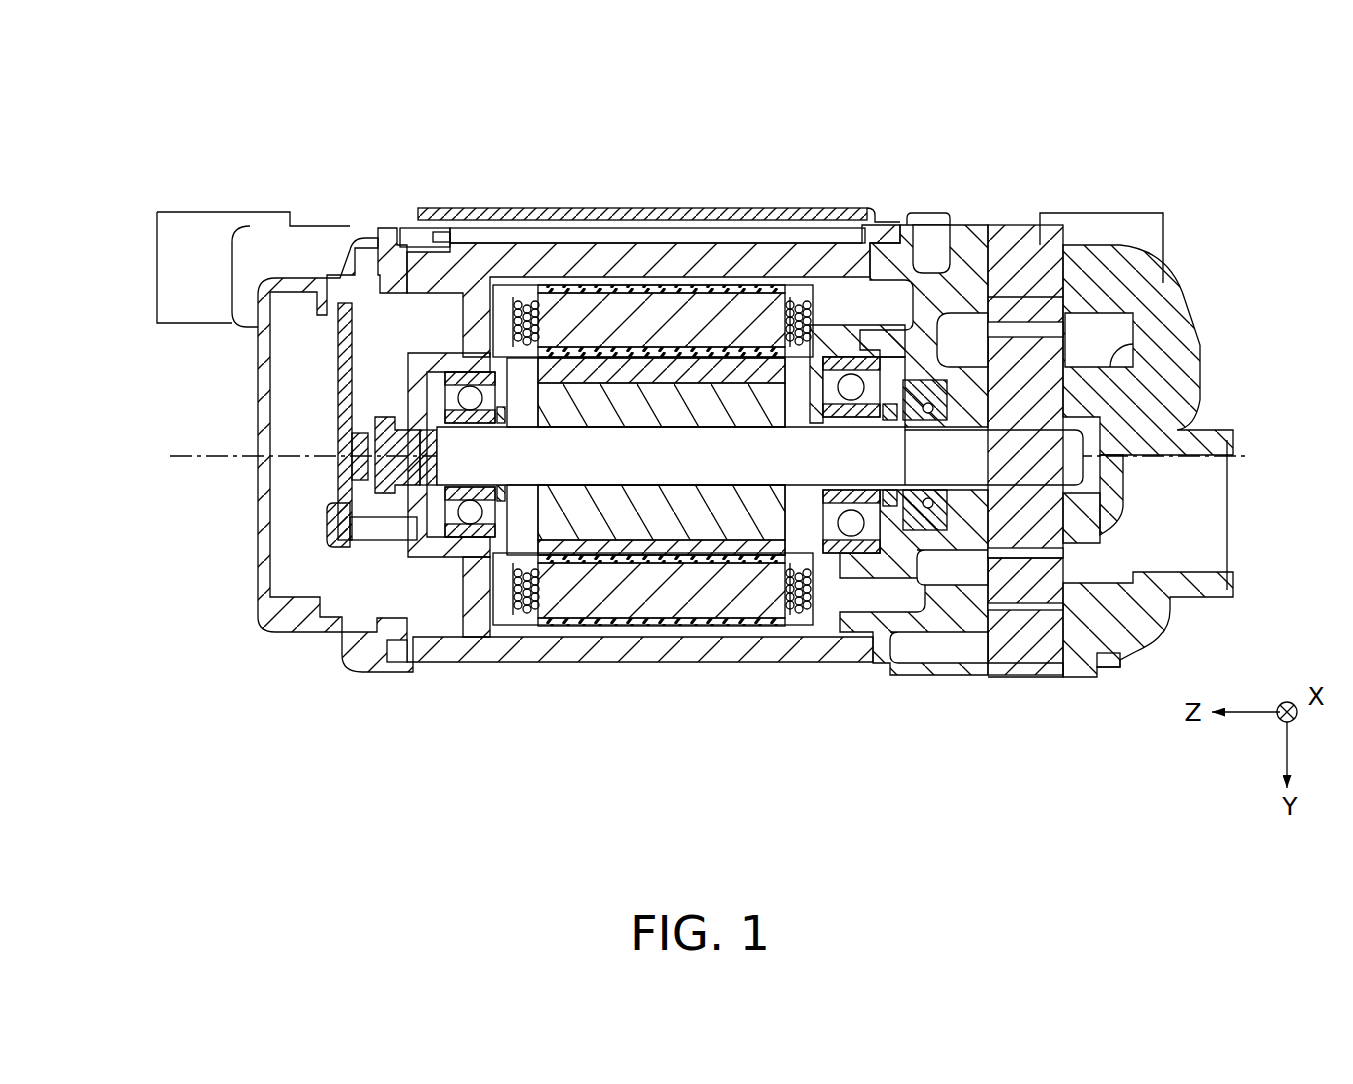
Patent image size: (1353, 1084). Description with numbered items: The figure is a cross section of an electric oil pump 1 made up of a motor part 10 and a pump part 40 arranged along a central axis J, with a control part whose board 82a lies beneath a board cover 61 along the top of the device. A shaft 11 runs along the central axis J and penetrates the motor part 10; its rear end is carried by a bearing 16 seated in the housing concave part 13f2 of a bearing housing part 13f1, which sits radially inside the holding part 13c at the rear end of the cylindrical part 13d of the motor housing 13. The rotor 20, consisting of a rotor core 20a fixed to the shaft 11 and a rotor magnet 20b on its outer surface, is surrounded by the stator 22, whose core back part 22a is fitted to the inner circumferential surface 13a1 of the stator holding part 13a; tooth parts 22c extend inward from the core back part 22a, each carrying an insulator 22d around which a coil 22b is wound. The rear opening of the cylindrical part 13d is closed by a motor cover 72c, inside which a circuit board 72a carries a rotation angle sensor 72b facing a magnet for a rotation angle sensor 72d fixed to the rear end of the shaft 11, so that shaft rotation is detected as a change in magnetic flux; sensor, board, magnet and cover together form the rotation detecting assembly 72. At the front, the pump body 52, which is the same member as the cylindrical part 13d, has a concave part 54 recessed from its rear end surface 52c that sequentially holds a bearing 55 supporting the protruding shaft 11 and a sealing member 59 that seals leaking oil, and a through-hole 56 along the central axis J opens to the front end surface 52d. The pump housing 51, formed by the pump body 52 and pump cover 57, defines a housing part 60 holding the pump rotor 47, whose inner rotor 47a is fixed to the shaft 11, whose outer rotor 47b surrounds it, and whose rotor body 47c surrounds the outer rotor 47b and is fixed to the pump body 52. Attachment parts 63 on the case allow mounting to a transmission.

The electric oil pump 1 is at (697, 446).
The motor part 10 is at (666, 469).
The shaft 11 is at (960, 438).
The motor housing 13 is at (592, 534).
The stator holding part 13a is at (630, 645).
The inner circumferential surface 13a1 is at (670, 657).
The holding part 13c is at (460, 652).
The cylindrical part 13d is at (510, 662).
The bearing housing part 13f1 is at (355, 668).
The housing concave part 13f2 is at (425, 660).
The bearing 16 is at (470, 512).
The rotor 20 is at (654, 348).
The rotor core 20a is at (622, 393).
The rotor magnet 20b is at (740, 372).
The stator 22 is at (653, 531).
The core back part 22a is at (608, 628).
The coil 22b is at (790, 633).
The tooth part 22c is at (750, 615).
The insulator 22d is at (565, 640).
The pump part 40 is at (1053, 464).
The pump rotor 47 is at (1140, 522).
The inner rotor 47a is at (1050, 532).
The outer rotor 47b is at (1035, 590).
The rotor body 47c is at (1000, 650).
The pump housing 51 is at (1040, 243).
The pump body 52 is at (901, 478).
The end surface 52c is at (826, 560).
The end surface 52d is at (1000, 385).
The concave part 54 is at (865, 548).
The bearing 55 is at (853, 545).
The through-hole 56 is at (1150, 408).
The pump cover 57 is at (1130, 680).
The sealing member 59 is at (895, 560).
The housing part 60 is at (1060, 665).
The board cover 61 is at (500, 207).
The attachment part 63 is at (165, 230).
The cover member 72 is at (294, 475).
The circuit board 72a is at (345, 410).
The rotation angle sensor 72b is at (355, 447).
The motor cover 72c is at (272, 625).
The magnet for a rotation angle sensor 72d is at (393, 462).
The board 82a is at (815, 228).
The central axis J is at (205, 460).